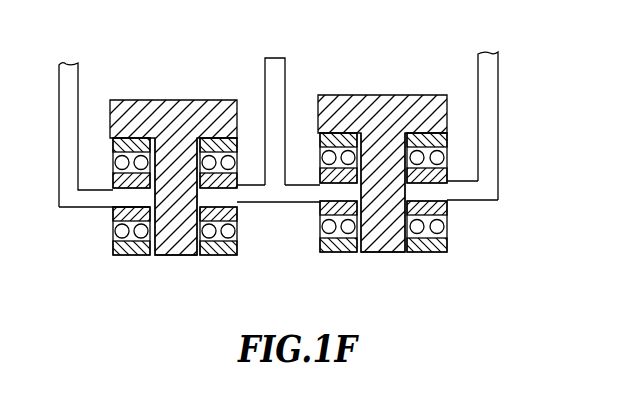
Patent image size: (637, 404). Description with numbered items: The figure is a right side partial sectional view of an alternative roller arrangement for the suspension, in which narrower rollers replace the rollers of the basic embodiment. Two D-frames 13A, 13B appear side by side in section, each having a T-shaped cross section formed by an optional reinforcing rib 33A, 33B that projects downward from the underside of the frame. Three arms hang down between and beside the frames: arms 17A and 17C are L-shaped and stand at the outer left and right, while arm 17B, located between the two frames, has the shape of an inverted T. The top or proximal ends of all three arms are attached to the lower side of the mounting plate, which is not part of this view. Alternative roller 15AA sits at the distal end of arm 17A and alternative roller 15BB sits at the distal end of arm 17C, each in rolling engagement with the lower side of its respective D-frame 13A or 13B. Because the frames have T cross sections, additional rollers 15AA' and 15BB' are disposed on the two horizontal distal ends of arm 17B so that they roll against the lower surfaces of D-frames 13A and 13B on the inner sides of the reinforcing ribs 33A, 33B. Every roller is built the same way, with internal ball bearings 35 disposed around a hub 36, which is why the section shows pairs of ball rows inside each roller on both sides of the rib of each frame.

The D-frame 13A is at (178, 110).
The D-frame 13B is at (392, 105).
The arm 17A is at (70, 86).
The arm 17B is at (278, 85).
The arm 17C is at (492, 76).
The internal ball bearings 35 is at (118, 163).
The hubs 36 is at (112, 215).
The alternative roller 15AA is at (91, 235).
The additional roller 15AA' is at (255, 248).
The alternative roller 15BB is at (469, 226).
The additional roller 15BB' is at (304, 228).
The reinforcing rib 33A is at (177, 256).
The reinforcing rib 33B is at (385, 253).